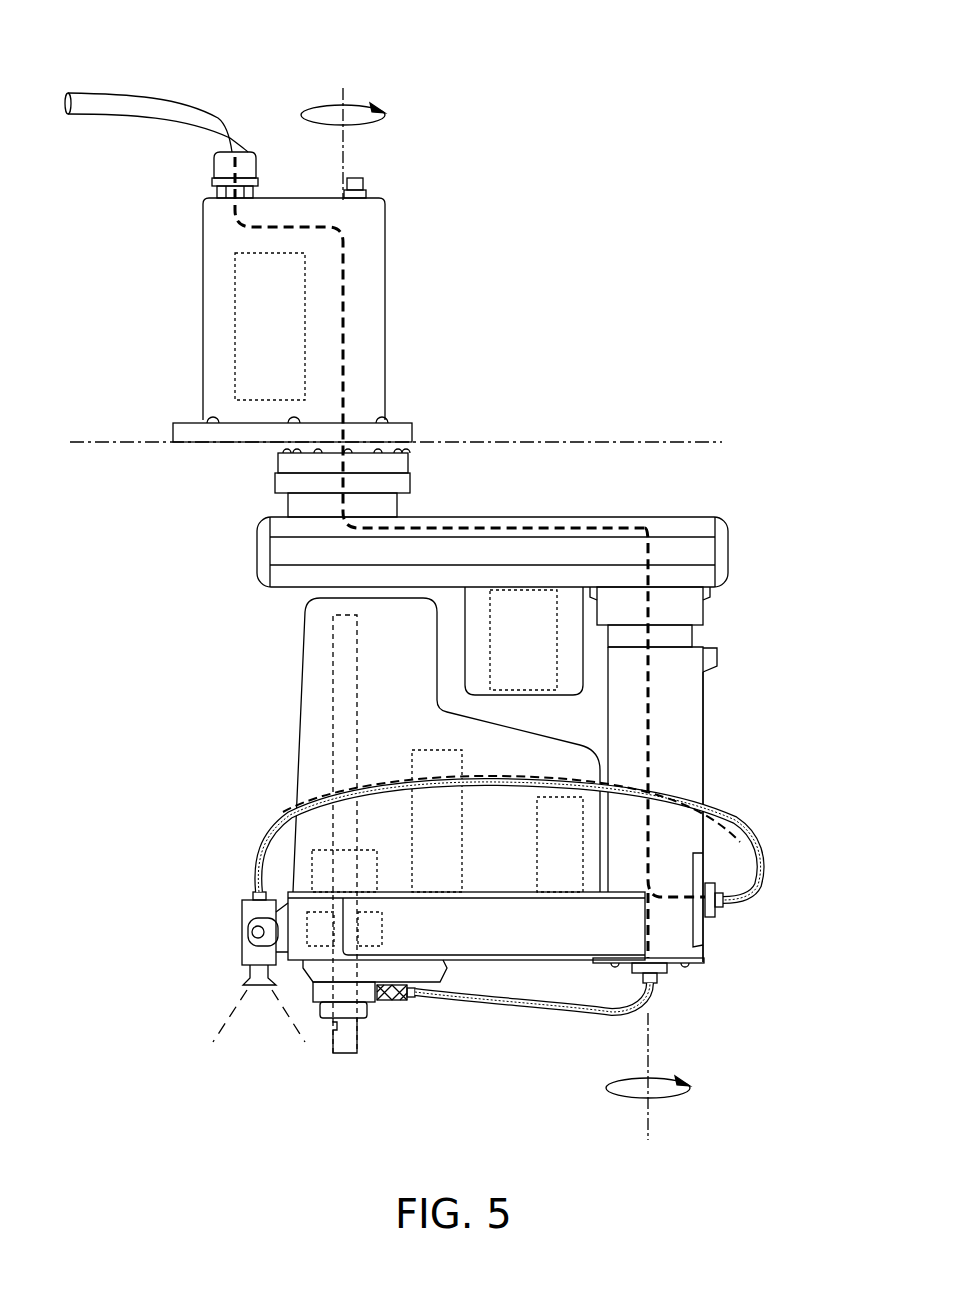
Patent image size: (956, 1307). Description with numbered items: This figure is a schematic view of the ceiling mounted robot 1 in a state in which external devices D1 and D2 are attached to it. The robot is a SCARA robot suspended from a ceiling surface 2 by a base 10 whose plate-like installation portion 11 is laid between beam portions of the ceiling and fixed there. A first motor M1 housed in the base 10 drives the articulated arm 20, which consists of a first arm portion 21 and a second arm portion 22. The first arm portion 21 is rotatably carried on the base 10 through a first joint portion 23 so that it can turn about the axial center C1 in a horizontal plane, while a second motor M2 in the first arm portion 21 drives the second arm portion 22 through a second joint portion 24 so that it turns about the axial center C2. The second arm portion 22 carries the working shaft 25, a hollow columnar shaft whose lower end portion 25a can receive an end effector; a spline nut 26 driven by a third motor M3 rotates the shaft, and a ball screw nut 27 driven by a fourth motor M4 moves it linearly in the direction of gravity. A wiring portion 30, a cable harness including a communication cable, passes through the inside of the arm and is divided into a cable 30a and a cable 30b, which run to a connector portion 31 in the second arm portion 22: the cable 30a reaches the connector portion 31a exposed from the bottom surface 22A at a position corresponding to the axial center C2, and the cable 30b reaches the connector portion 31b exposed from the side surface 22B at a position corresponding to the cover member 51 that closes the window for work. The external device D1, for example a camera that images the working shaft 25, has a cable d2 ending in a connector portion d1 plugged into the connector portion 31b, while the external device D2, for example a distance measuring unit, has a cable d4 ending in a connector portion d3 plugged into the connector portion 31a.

The ceiling mounted robot 1 is at (268, 99).
The ceiling surface 2 is at (113, 440).
The base 10 is at (203, 282).
The installation portion 11 is at (182, 422).
The articulated arm 20 is at (258, 557).
The first arm portion 21 is at (563, 516).
The second arm portion 22 is at (682, 864).
The bottom surface 22A is at (603, 965).
The side surface 22B is at (704, 790).
The first joint portion 23 is at (276, 470).
The second joint portion 24 is at (705, 605).
The working shaft 25 is at (335, 738).
The lower end portion 25a is at (332, 1031).
The spline nut 26 is at (312, 870).
The ball screw nut 27 is at (305, 930).
The wiring portion 30 is at (530, 527).
The cable 30a is at (650, 930).
The cable 30b is at (668, 896).
The connector portion 31 is at (748, 956).
The connector portion 31a is at (665, 973).
The connector portion 31b is at (707, 918).
The cover member 51 is at (707, 862).
The axial center C1 is at (345, 152).
The axial center C2 is at (648, 1107).
The external device D1 is at (242, 920).
The external device D2 is at (390, 1004).
The first motor M1 is at (250, 253).
The second motor M2 is at (493, 612).
The third motor M3 is at (537, 848).
The fourth motor M4 is at (462, 852).
The connector portion d1 is at (723, 904).
The cable d2 is at (740, 812).
The connector portion d3 is at (657, 983).
The cable d4 is at (622, 1014).